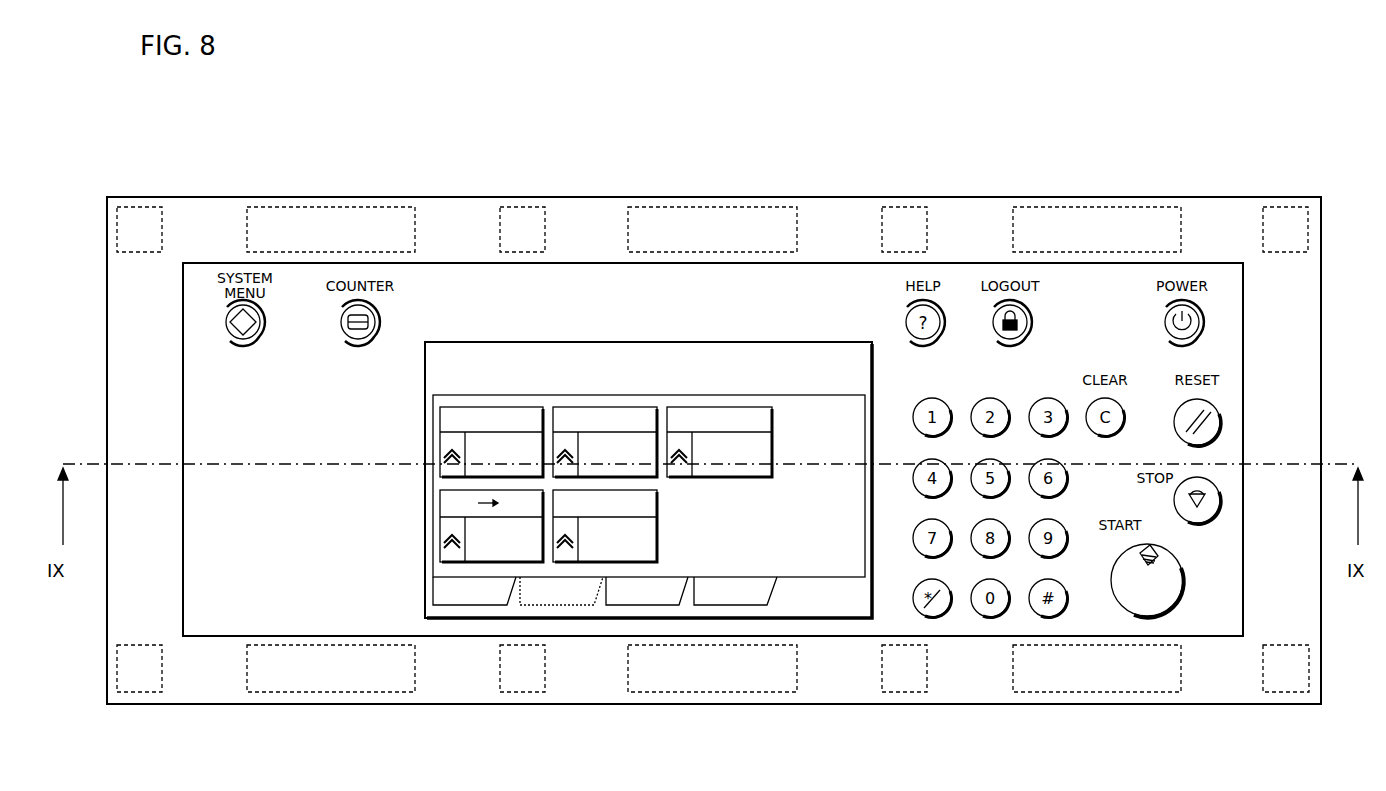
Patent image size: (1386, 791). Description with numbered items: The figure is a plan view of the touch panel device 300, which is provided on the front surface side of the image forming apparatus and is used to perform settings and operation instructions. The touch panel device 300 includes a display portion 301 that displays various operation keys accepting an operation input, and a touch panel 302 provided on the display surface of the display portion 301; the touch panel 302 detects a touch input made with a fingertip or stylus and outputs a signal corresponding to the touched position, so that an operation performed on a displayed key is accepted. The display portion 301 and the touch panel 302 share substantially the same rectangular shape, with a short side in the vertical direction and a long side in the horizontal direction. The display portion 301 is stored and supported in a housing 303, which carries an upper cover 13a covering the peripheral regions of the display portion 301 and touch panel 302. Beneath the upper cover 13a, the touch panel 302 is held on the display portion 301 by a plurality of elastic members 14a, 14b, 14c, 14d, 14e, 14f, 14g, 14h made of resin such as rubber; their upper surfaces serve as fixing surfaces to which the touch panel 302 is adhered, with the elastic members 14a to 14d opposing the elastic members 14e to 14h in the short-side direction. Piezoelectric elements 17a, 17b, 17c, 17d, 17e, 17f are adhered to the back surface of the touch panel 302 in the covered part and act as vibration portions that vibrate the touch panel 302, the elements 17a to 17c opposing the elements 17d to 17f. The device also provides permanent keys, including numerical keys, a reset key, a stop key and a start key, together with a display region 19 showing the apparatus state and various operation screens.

The upper cover 13a is at (468, 237).
The elastic member 14a is at (143, 218).
The elastic member 14b is at (518, 218).
The elastic member 14c is at (897, 217).
The elastic member 14d is at (1275, 218).
The elastic member 14e is at (140, 680).
The elastic member 14f is at (518, 680).
The elastic member 14g is at (897, 680).
The elastic member 14h is at (1283, 680).
The piezoelectric element 17a is at (345, 215).
The piezoelectric element 17b is at (690, 215).
The piezoelectric element 17c is at (1088, 215).
The piezoelectric element 17d is at (318, 680).
The piezoelectric element 17e is at (697, 680).
The piezoelectric element 17f is at (1110, 680).
The display region 19 is at (703, 342).
The touch panel device 300 is at (1010, 158).
The display portion 301 is at (805, 307).
The touch panel 302 is at (713, 375).
The housing 303 is at (1211, 197).